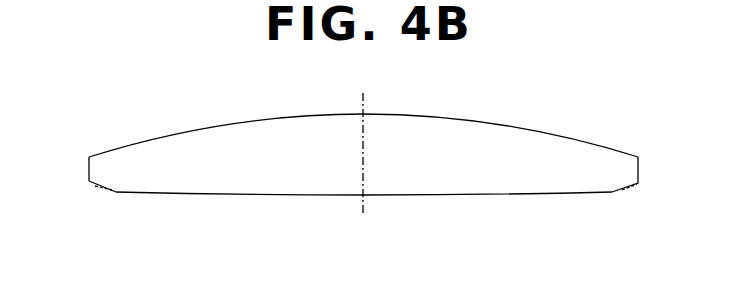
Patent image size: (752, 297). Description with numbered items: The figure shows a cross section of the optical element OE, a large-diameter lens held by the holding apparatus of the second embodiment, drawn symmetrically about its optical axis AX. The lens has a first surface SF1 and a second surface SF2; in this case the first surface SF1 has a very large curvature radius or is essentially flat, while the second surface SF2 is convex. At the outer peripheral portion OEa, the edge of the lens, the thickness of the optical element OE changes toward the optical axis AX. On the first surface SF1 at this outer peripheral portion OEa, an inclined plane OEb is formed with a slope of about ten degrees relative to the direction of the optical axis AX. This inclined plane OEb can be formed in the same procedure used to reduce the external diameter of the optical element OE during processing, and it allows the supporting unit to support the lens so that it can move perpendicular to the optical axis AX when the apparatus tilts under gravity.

The optical element OE is at (358, 172).
The outer peripheral portion OEa is at (124, 176).
The inclined plane OEb is at (95, 188).
The first surface SF1 is at (142, 194).
The second surface SF2 is at (602, 145).
The optical axis AX is at (365, 104).